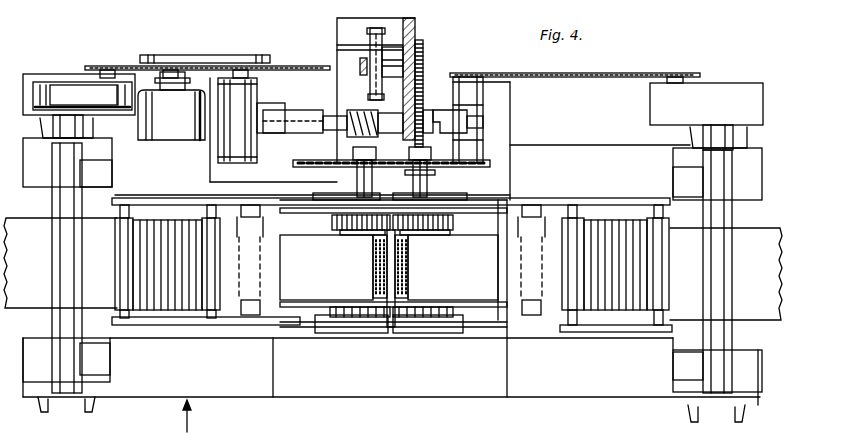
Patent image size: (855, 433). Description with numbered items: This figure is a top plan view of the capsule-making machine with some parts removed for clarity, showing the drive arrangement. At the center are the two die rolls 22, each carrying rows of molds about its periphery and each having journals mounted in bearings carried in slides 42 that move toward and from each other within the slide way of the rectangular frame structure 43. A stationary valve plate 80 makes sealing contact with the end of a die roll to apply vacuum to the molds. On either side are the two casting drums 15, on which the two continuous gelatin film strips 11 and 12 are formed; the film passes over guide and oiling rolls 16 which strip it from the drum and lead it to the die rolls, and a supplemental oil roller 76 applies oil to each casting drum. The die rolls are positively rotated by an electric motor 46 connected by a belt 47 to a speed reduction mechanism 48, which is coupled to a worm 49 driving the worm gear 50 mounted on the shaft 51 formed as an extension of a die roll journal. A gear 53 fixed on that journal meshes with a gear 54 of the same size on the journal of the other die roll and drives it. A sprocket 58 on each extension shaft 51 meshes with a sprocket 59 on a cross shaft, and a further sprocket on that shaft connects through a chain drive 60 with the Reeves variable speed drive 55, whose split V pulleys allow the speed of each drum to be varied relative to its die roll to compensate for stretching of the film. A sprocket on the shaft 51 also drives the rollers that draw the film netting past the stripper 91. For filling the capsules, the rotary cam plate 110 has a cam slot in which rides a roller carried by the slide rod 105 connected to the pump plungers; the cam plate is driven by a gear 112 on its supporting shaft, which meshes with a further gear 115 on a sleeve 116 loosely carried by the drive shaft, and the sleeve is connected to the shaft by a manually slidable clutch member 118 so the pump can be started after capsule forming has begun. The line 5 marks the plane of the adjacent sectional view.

The line 5— 5 is at (178, 416).
The gelatin film strip 11 is at (333, 267).
The gelatin film strip 12 is at (446, 260).
The casting drum 15 is at (766, 222).
The guide and oiling rolls 16 is at (207, 318).
The die roll 22 is at (325, 233).
The slides 42 is at (368, 334).
The rectangular frame structure 43 is at (298, 326).
The electric motor 46 is at (171, 106).
The belt 47 is at (218, 58).
The speed reduction mechanism 48 is at (282, 120).
The worm 49 is at (360, 112).
The worm gear 50 is at (352, 136).
The shaft 51 is at (357, 188).
The gear 53 is at (332, 220).
The gear 54 is at (453, 222).
The Reeves variable speed drive 55 is at (48, 80).
The sprocket 58 is at (397, 166).
The sprocket 59 is at (293, 166).
The chain drive 60 is at (310, 67).
The supplemental oil roller 76 is at (118, 298).
The stationary valve plate 80 is at (452, 312).
The stripper 91 is at (405, 173).
The slide rod 105 is at (360, 70).
The rotary cam plate 110 is at (372, 32).
The gear 112 is at (412, 36).
The gear 115 is at (422, 140).
The sleeve 116 is at (430, 110).
The manually slidable clutch member 118 is at (446, 112).